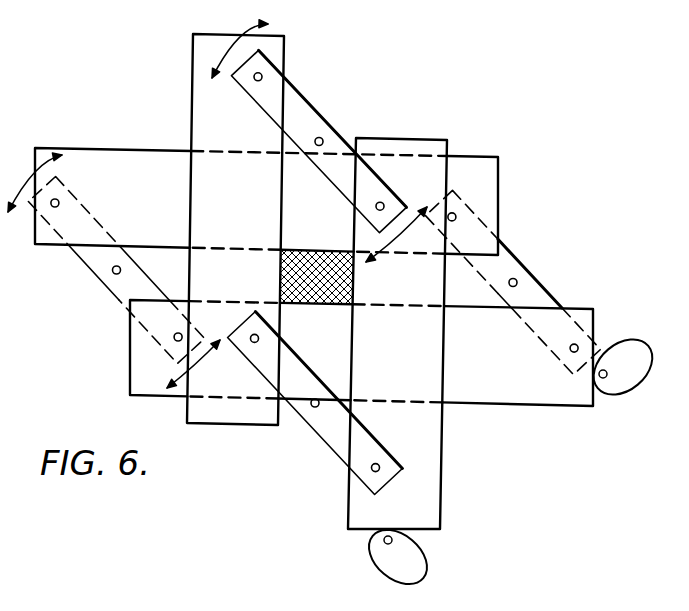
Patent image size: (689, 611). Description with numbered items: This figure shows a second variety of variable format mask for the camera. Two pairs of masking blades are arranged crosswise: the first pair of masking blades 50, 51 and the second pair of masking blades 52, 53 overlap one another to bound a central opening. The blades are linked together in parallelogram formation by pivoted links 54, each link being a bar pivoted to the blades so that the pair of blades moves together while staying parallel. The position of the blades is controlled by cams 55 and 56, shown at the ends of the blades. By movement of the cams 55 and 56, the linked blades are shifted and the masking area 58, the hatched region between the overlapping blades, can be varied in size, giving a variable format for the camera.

The masking blade 50 is at (191, 73).
The masking blade 51 is at (418, 138).
The masking blade 52 is at (84, 153).
The masking blade 53 is at (521, 393).
The pivoted link 54 is at (97, 268).
The cam 55 is at (368, 552).
The cam 56 is at (622, 352).
The masking area 58 is at (297, 257).